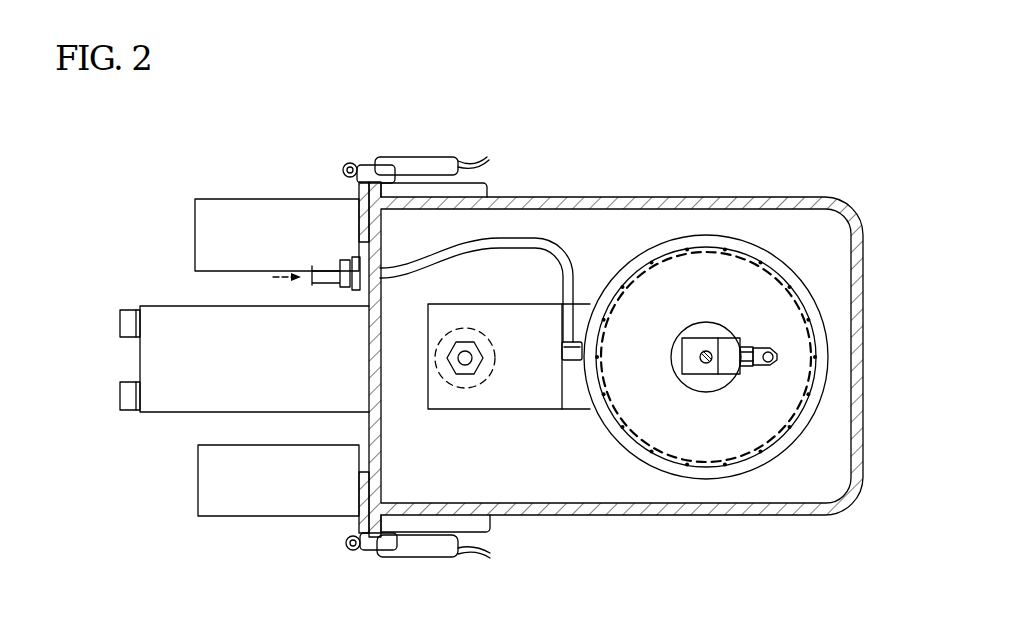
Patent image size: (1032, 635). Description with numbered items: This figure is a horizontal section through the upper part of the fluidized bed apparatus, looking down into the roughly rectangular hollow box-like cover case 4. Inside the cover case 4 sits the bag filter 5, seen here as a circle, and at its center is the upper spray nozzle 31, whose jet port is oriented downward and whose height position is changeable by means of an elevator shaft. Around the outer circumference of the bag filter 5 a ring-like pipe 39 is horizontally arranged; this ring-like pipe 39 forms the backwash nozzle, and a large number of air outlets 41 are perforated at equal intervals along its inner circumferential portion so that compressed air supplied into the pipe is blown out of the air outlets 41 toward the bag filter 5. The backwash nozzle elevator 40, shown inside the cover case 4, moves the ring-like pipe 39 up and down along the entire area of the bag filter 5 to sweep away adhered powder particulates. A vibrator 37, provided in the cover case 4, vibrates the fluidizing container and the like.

The cover case 4 is at (644, 191).
The bag filter 5 is at (768, 276).
The upper spray nozzle 31 is at (736, 316).
The vibrator 37 is at (178, 400).
The ring-like pipe 39 is at (822, 366).
The backwash nozzle elevator 40 is at (490, 384).
The air outlets 41 is at (760, 452).